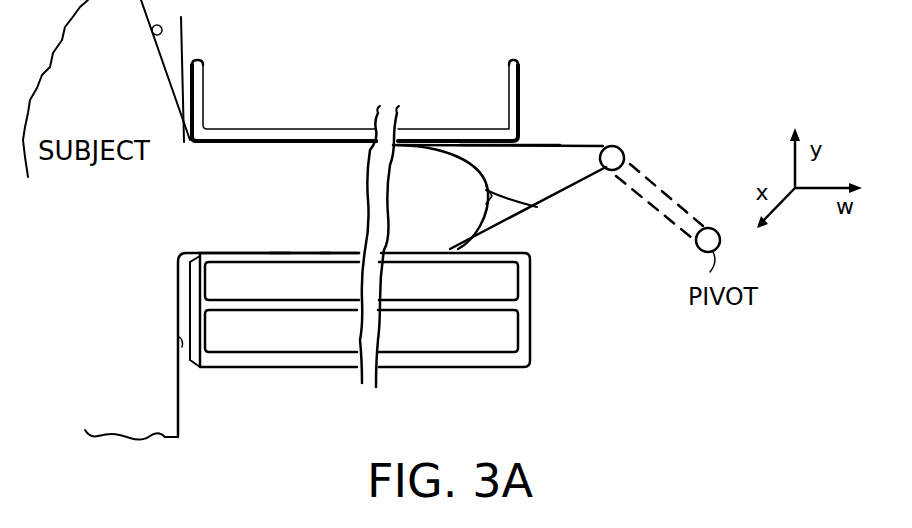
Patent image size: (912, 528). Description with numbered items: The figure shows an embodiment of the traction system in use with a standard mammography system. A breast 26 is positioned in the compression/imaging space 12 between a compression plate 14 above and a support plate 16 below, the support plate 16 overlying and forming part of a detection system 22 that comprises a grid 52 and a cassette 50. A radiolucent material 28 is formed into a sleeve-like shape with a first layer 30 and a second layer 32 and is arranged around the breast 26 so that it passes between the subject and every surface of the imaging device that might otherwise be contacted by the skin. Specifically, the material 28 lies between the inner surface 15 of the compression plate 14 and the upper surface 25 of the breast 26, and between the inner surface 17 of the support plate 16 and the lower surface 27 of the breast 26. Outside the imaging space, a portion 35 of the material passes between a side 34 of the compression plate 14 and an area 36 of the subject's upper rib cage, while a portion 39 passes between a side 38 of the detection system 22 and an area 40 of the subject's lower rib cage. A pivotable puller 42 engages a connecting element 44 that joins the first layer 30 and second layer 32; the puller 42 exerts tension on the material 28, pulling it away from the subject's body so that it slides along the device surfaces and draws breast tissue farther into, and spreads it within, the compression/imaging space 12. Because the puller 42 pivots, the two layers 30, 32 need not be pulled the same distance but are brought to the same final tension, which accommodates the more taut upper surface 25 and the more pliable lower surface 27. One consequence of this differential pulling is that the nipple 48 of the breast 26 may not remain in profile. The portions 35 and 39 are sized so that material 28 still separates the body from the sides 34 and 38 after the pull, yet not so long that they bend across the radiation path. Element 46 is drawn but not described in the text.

The compression/imaging space 12 is at (586, 220).
The compression plate 14 is at (259, 130).
The inner surface of the compression plate 15 is at (297, 142).
The support plate 16 is at (265, 252).
The inner surface of the support plate 17 is at (297, 252).
The detection system 22 is at (543, 326).
The upper surface of the breast 25 is at (337, 145).
The breast 26 is at (344, 197).
The lower surface of the breast 27 is at (337, 252).
The radiolucent material 28 is at (573, 141).
The first layer 30 is at (540, 147).
The second layer 32 is at (569, 188).
The side of the compression plate 34 is at (196, 113).
The portion of the material 35 is at (180, 78).
The area of the subject's upper rib cage 36 is at (152, 27).
The side of the detection system 38 is at (196, 282).
The portion of the material 39 is at (190, 313).
The area of the subject's lower rib cage 40 is at (177, 346).
The pivotable puller 42 is at (642, 136).
The connecting element 44 is at (627, 157).
The rounded corner 46 is at (186, 259).
The nipple 48 is at (534, 209).
The cassette 50 is at (452, 340).
The grid 52 is at (424, 291).